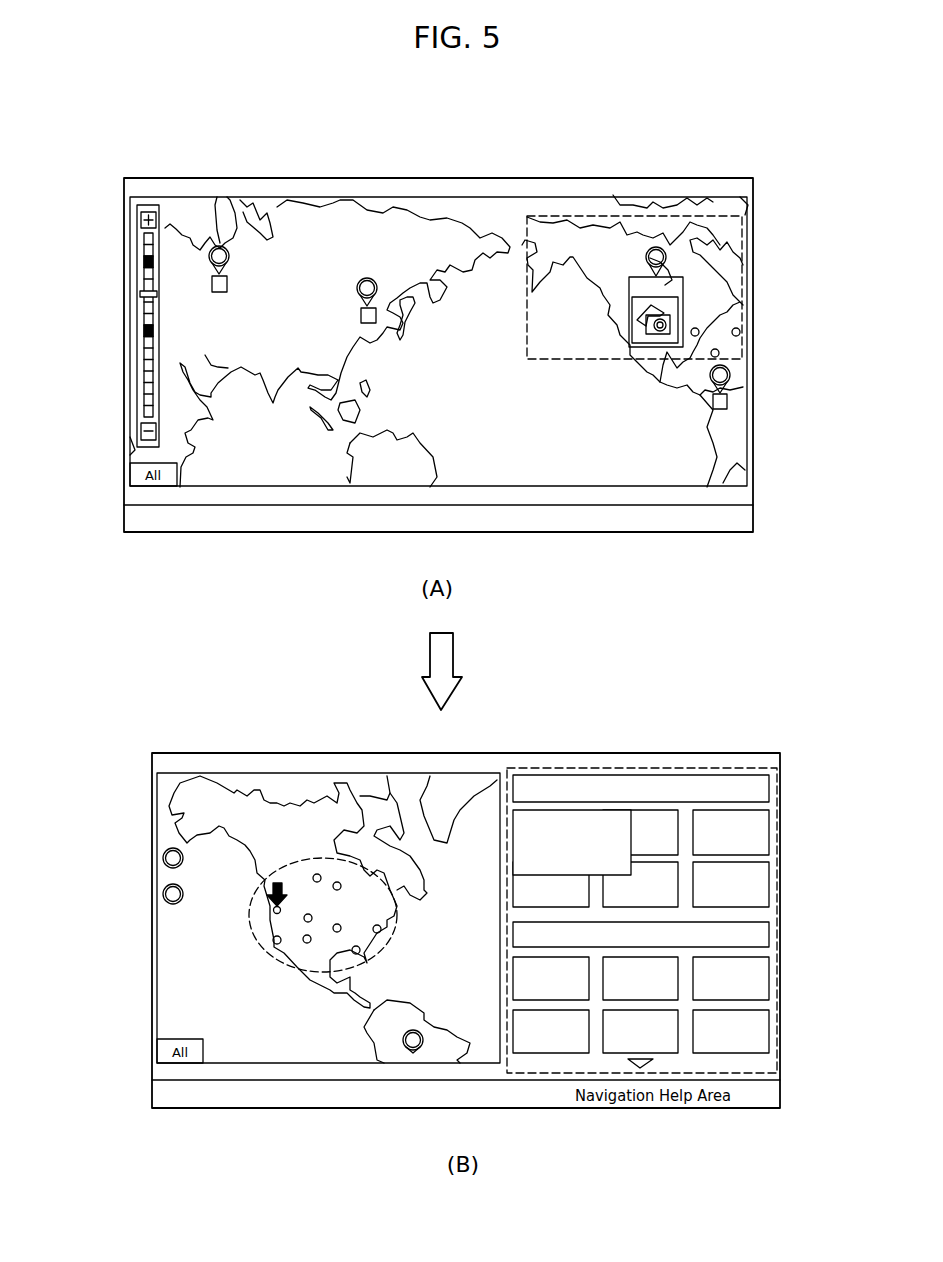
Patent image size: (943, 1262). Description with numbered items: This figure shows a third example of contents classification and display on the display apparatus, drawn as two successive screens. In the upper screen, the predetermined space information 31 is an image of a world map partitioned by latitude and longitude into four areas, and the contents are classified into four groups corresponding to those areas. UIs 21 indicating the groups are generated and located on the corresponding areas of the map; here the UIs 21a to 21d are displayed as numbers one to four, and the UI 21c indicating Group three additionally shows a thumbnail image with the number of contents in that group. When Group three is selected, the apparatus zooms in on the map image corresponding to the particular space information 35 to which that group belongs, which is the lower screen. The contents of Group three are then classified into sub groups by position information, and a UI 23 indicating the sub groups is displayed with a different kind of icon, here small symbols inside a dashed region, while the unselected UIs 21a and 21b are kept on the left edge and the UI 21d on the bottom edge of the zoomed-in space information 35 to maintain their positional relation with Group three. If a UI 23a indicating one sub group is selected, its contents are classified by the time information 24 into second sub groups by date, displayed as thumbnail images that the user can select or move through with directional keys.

The UI 21 is at (413, 1053).
The UI indicating Group 1 21a is at (218, 246).
The UI indicating Group 2 21b is at (366, 278).
The UI indicating Group 3 21c is at (654, 247).
The UI indicating Group 4 21d is at (731, 375).
The UI indicating sub groups 23 is at (295, 945).
The UI indicating one sub group 23a is at (272, 912).
The time information 24 is at (777, 834).
The predetermined space information 31 is at (478, 238).
The particular space information 35 is at (582, 215).